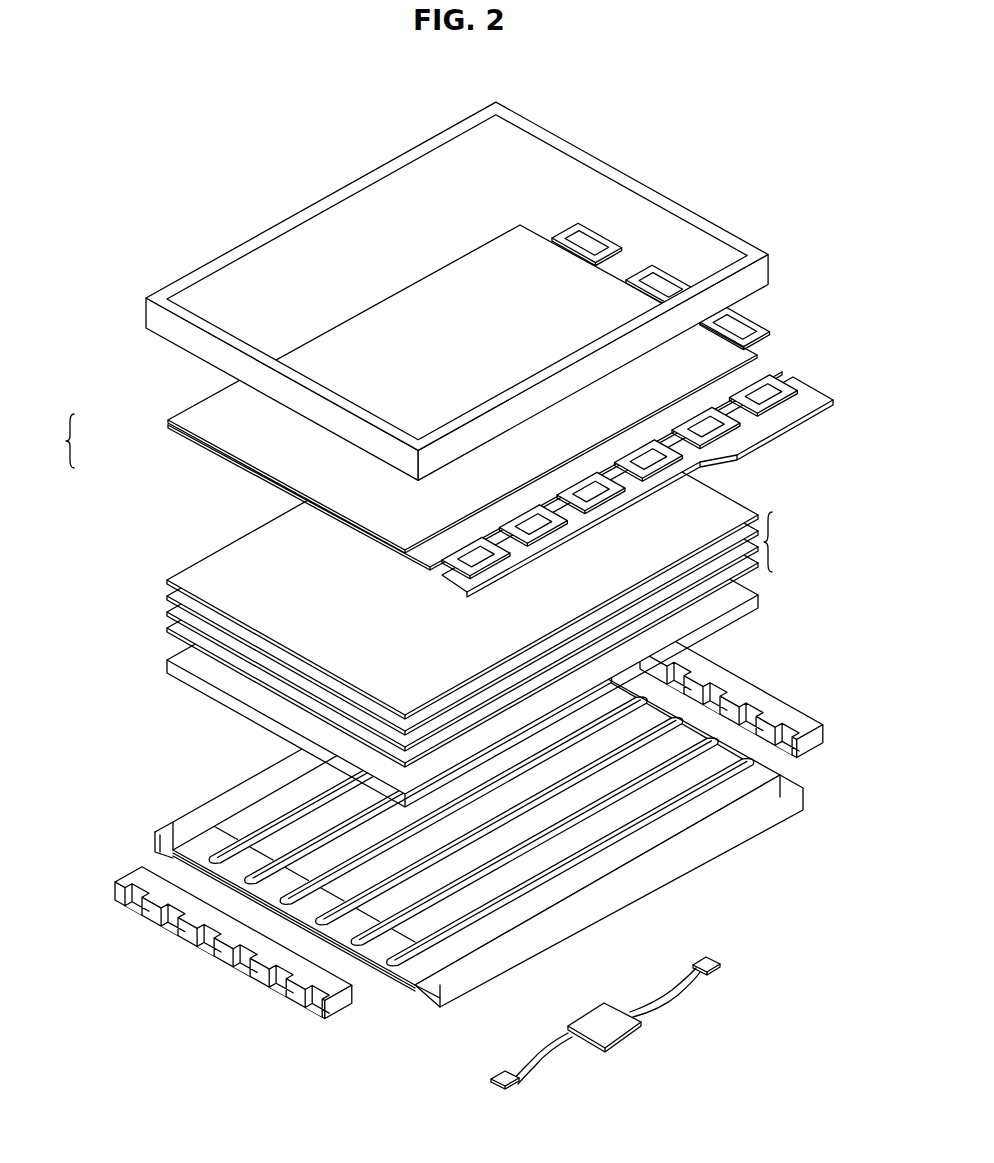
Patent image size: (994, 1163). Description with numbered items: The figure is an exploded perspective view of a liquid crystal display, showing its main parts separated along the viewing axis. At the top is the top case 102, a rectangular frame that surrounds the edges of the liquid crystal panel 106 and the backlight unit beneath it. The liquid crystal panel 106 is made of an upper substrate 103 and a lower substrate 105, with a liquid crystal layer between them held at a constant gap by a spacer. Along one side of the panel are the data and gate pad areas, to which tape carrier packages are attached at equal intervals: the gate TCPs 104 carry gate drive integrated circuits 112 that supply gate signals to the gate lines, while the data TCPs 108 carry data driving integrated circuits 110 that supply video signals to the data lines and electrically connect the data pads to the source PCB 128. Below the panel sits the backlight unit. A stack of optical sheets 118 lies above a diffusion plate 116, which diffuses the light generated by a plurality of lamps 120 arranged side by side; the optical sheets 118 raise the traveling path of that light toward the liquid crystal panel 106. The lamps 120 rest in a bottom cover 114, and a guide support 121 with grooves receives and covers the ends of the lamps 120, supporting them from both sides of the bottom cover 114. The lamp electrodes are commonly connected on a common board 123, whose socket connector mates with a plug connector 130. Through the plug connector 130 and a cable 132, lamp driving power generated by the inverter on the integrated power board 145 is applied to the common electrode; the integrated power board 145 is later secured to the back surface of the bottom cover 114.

The top case 102 is at (712, 232).
The upper substrate 103 is at (168, 421).
The gate TCPs 104 is at (600, 240).
The lower substrate 105 is at (168, 430).
The liquid crystal panel 106 is at (408, 397).
The data TCPs 108 is at (795, 393).
The data driving integrated circuits 110 is at (765, 406).
The gate drive integrated circuits 112 is at (572, 242).
The bottom cover 114 is at (405, 990).
The diffusion plate 116 is at (770, 604).
The optical sheets 118 is at (491, 573).
The lamps 120 is at (283, 825).
The guide support 121 is at (225, 963).
The common board 123 is at (222, 845).
The source PCB 128 is at (815, 410).
The plug connector 130 is at (716, 962).
The cable 132 is at (682, 997).
The integrated power board 145 is at (630, 1038).